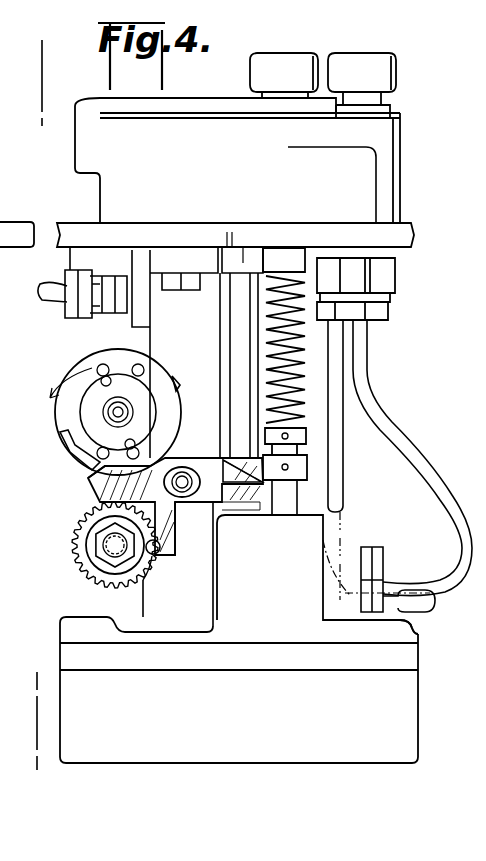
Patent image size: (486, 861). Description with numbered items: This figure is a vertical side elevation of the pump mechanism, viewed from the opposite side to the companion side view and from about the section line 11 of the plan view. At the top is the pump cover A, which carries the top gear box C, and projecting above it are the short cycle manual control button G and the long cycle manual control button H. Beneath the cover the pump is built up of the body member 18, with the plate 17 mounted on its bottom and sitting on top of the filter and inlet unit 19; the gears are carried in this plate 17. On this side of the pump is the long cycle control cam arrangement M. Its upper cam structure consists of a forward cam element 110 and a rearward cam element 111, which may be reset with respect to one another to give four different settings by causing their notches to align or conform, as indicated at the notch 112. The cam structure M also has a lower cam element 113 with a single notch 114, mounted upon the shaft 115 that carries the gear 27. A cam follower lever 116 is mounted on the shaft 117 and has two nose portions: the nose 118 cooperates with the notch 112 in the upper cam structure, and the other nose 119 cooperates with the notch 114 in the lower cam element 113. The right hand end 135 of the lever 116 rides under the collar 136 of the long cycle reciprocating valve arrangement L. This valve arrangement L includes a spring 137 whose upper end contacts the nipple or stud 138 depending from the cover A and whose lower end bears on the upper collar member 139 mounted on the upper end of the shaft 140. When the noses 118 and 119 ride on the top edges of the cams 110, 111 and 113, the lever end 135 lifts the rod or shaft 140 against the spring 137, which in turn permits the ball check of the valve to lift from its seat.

The section line 11- 11 is at (34, 67).
The top gear box C is at (115, 136).
The short cycle manual control button G is at (284, 62).
The long cycle manual control button H is at (357, 65).
The pump cover A is at (414, 218).
The nipple or stud 138 is at (277, 254).
The spring 137 is at (263, 298).
The upper collar member 139 is at (306, 430).
The collar 136 is at (300, 470).
The rod or shaft 140 is at (283, 500).
The long cycle reciprocating valve arrangement L is at (312, 455).
The forward cam element 110 is at (72, 397).
The rearward cam element 111 is at (176, 380).
The notch 112 is at (95, 463).
The long cycle control cam arrangement M is at (77, 485).
The nose portion 118 is at (100, 478).
The shaft 117 is at (183, 478).
The cam follower lever 116 is at (178, 504).
The nose 119 is at (160, 553).
The single notch 114 is at (150, 570).
The right hand end of the lever 135 is at (245, 493).
The gear 27 is at (80, 578).
The lower cam element 113 is at (88, 560).
The shaft 115 is at (112, 544).
The body member 18 is at (404, 642).
The plate 17 is at (402, 661).
The filter and inlet unit 19 is at (400, 707).